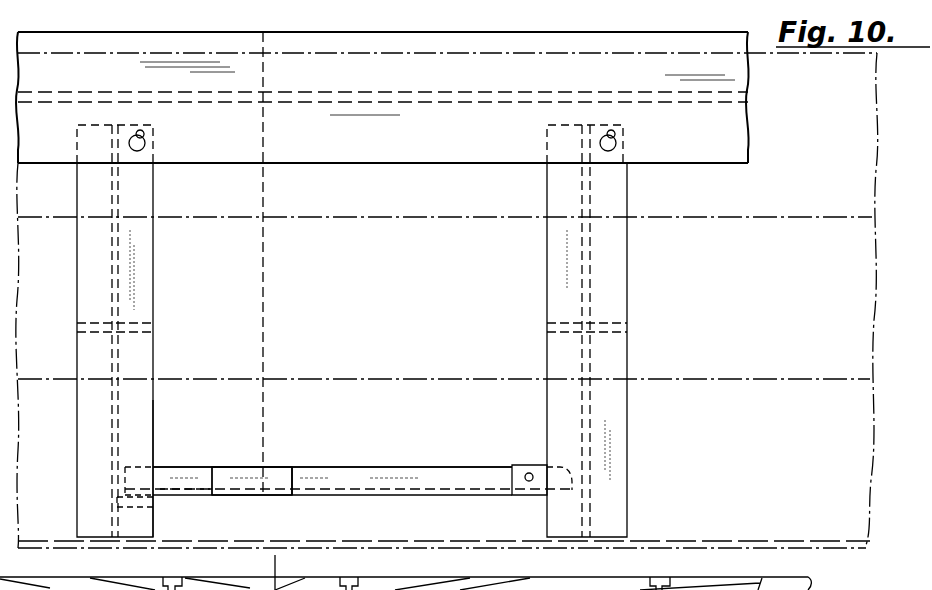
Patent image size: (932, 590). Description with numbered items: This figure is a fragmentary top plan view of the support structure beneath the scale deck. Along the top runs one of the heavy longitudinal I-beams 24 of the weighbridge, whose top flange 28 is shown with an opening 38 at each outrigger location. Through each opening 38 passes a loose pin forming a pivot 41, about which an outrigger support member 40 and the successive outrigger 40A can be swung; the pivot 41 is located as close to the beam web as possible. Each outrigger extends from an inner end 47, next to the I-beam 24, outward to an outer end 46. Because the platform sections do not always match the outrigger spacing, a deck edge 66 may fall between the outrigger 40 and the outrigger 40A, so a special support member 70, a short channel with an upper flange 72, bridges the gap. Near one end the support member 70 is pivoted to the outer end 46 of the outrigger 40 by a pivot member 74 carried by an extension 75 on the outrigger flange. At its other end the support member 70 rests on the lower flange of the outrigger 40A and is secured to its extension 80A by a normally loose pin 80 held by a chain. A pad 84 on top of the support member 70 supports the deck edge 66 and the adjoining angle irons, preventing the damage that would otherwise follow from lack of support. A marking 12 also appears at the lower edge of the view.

The I-beam 24 is at (738, 118).
The top flange 28 is at (423, 150).
The opening 38 is at (142, 138).
The outrigger support member 40 is at (617, 468).
The outrigger 40A is at (153, 437).
The pivot 41 is at (145, 145).
The outer end 46 is at (103, 542).
The inner end 47 is at (90, 124).
The edge 66 is at (262, 588).
The support member 70 is at (383, 466).
The upper flange 72 is at (445, 473).
The pivot member 74 is at (528, 482).
The extension 75 is at (518, 470).
The pin 80 is at (172, 470).
The extension 80A is at (200, 472).
The pad 84 is at (293, 466).
The section line 12 is at (276, 563).